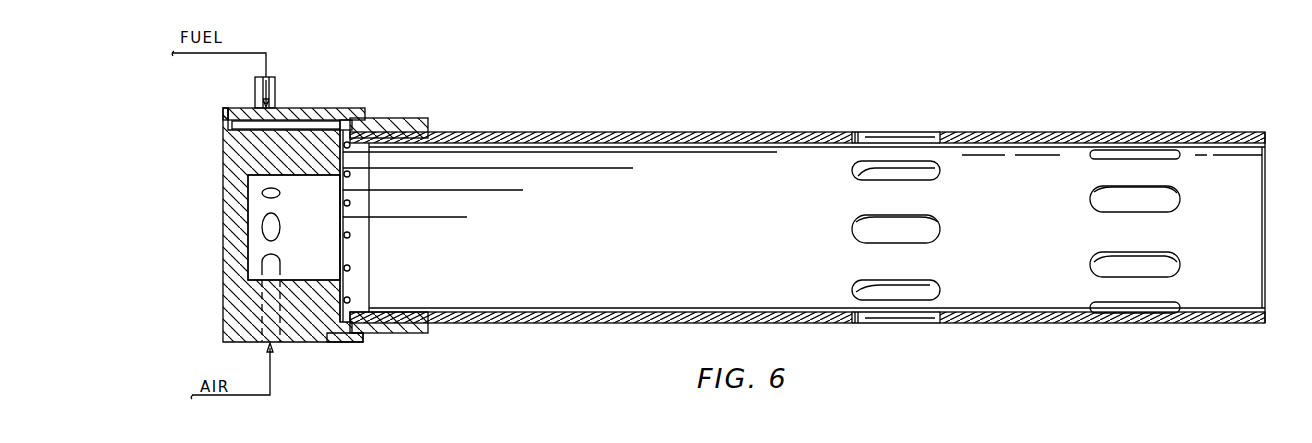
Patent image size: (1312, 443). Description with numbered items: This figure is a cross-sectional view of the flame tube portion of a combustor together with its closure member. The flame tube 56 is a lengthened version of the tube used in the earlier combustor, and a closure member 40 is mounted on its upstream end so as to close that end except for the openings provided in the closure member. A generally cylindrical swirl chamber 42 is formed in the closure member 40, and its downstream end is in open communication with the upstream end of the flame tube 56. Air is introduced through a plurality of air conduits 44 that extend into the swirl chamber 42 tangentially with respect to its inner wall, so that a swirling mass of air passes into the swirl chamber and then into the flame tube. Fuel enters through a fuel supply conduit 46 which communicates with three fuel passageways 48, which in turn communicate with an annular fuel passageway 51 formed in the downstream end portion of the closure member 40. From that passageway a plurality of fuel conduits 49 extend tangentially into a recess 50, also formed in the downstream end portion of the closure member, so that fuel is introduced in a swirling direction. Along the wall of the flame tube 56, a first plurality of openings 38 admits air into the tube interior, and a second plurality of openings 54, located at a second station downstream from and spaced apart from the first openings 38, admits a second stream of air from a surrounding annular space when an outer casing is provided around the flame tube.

The first plurality of openings 38 is at (907, 197).
The closure member 40 is at (237, 324).
The swirl chamber 42 is at (320, 241).
The air conduits 44 is at (278, 223).
The fuel supply conduit 46 is at (277, 95).
The fuel passageways 48 is at (244, 108).
The fuel conduits 49 is at (351, 298).
The recess 50 is at (353, 234).
The annular fuel passageway 51 is at (353, 116).
The second plurality of openings 54 is at (1147, 230).
The flame tube 56 is at (651, 132).